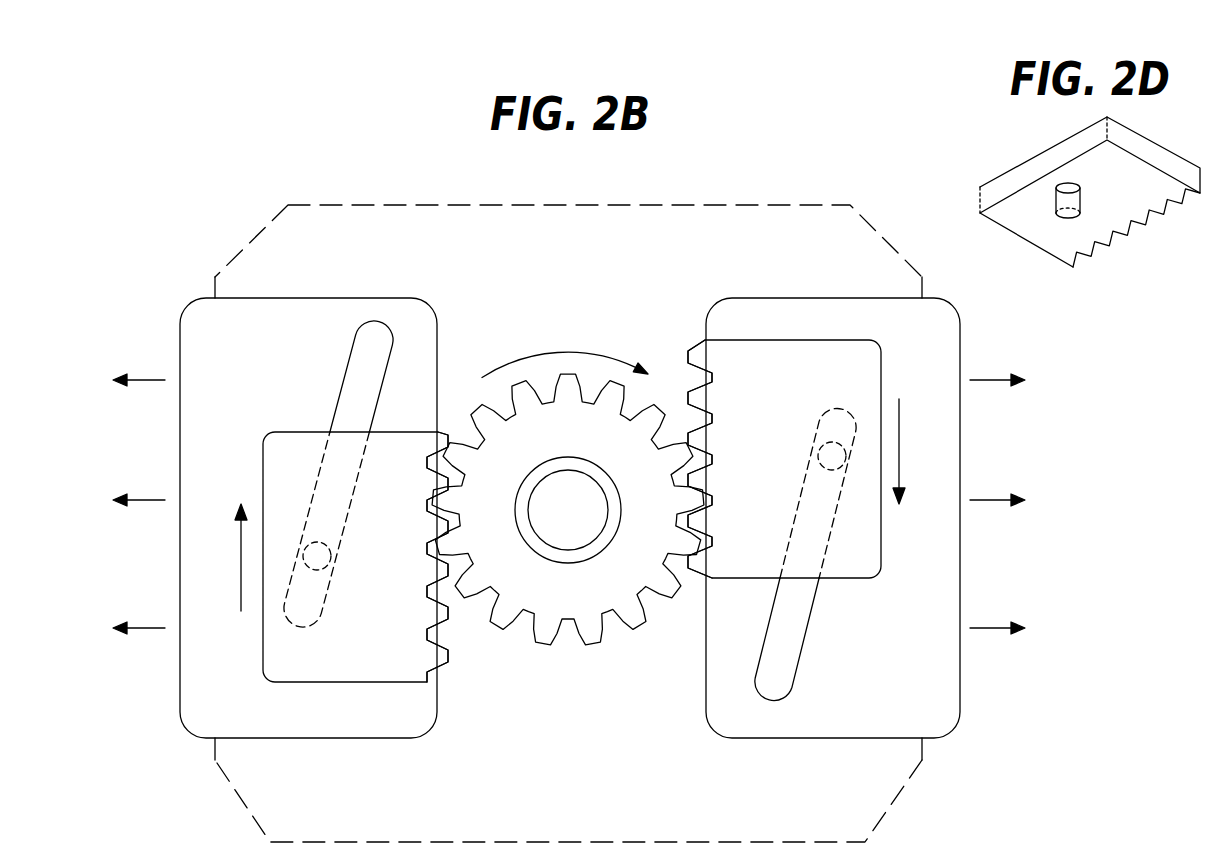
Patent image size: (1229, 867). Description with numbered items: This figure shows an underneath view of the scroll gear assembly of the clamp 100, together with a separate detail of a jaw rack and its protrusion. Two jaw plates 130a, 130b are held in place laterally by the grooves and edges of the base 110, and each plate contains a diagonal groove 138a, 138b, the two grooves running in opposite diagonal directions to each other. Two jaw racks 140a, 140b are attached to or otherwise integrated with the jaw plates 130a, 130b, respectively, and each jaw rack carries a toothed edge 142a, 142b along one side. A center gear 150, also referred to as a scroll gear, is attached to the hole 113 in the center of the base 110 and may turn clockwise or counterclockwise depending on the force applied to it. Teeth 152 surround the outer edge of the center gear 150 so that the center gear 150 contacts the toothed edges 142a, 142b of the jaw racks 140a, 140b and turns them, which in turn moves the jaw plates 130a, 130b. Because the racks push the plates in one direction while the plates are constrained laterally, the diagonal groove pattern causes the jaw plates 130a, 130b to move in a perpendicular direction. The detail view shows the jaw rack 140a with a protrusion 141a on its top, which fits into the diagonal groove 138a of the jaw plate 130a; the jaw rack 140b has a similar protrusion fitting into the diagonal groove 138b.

In FIG. 2B, the clamp 100 is at (157, 212).
In FIG. 2B, the base 110 is at (805, 204).
In FIG. 2B, the hole 113 is at (586, 524).
In FIG. 2B, the jaw plate 130a is at (265, 349).
In FIG. 2B, the jaw plate 130b is at (936, 349).
In FIG. 2B, the diagonal groove 138a is at (337, 405).
In FIG. 2B, the diagonal groove 138b is at (808, 629).
In FIG. 2B, the jaw rack 140a is at (395, 599).
In FIG. 2D, the jaw rack 140a is at (1027, 158).
In FIG. 2B, the jaw rack 140b is at (795, 446).
In FIG. 2D, the protrusion 141a is at (1066, 220).
In FIG. 2B, the toothed edge 142a is at (452, 648).
In FIG. 2B, the toothed edge 142b is at (686, 366).
In FIG. 2B, the center gear 150 is at (589, 446).
In FIG. 2B, the teeth 152 is at (604, 630).